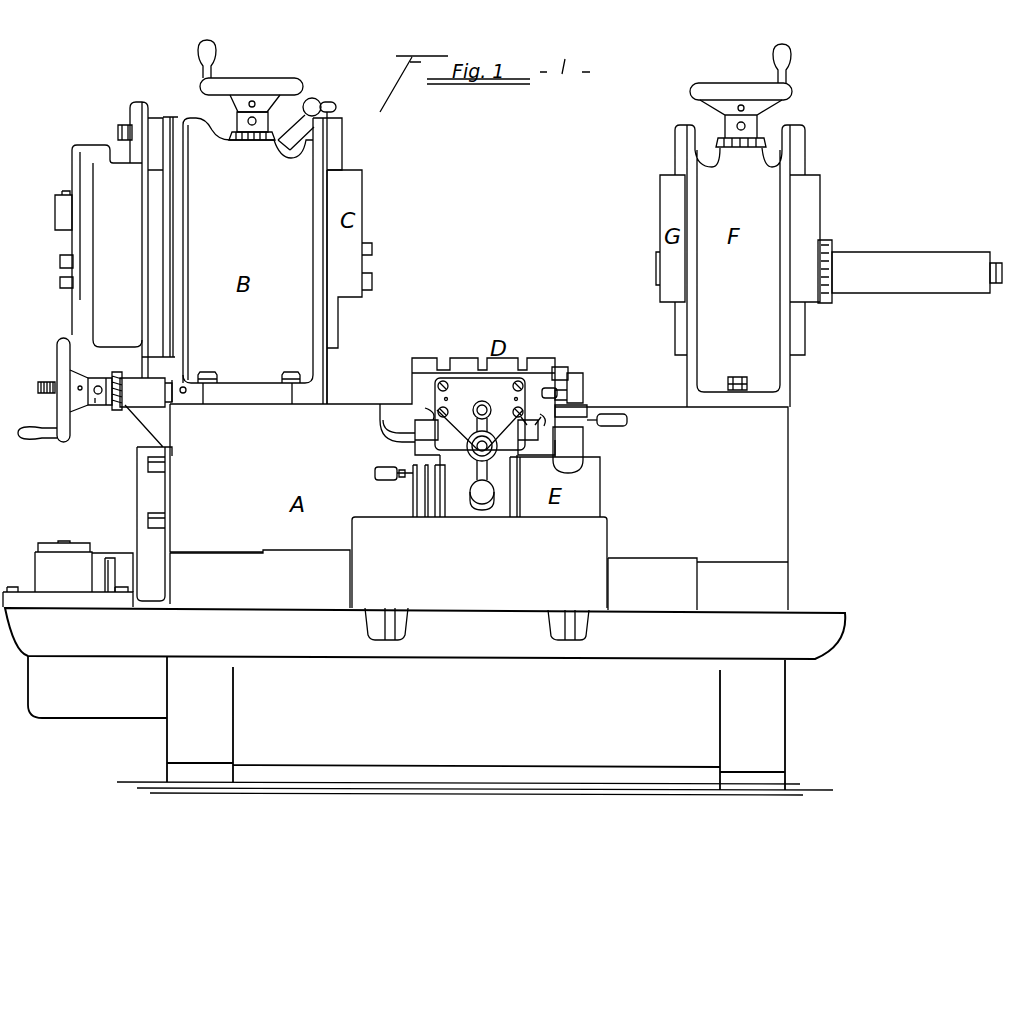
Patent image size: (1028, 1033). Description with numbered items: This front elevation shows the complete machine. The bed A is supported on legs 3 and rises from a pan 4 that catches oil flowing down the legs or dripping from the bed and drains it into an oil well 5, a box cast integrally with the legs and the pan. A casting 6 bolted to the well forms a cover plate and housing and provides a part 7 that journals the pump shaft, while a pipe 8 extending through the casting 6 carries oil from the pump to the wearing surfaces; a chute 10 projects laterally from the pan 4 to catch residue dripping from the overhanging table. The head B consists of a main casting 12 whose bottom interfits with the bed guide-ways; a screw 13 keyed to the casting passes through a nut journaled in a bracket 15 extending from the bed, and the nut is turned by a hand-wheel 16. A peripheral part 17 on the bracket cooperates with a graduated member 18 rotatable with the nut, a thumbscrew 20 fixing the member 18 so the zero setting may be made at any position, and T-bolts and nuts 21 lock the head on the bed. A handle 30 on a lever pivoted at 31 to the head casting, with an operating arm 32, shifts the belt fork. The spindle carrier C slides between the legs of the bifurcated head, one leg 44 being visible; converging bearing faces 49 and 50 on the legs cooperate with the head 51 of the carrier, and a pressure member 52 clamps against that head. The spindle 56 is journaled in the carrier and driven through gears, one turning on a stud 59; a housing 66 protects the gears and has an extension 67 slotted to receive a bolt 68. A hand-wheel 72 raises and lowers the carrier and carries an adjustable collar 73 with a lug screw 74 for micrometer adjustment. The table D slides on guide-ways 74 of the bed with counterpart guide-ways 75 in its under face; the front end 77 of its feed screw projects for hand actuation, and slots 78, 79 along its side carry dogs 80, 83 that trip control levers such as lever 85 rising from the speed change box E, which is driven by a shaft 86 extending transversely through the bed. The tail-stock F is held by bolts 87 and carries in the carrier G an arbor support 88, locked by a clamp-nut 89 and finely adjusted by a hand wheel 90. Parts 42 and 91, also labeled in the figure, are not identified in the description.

The legs 3 is at (479, 580).
The pan 4 is at (833, 627).
The oil well 5 is at (374, 719).
The casting 6 is at (20, 597).
The part 7 is at (88, 558).
The pipe 8 is at (110, 566).
The chute 10 is at (479, 578).
The main casting 12 is at (225, 391).
The screw 13 is at (42, 400).
The bracket 15 is at (145, 379).
The hand-wheel 16 is at (38, 387).
The peripheral part 17 is at (119, 373).
The member 18 is at (97, 378).
The thumbscrew 20 is at (95, 403).
The T-bolts and nuts 21 is at (283, 375).
The handle 30 is at (312, 98).
The pivot 31 is at (326, 104).
The operating arm 32 is at (296, 122).
The bracket 42 is at (140, 503).
The leg 44 is at (186, 150).
The bearing faces 49 is at (345, 150).
The bearing faces 50 is at (167, 312).
The head 51 is at (358, 199).
The pressure member 52 is at (160, 235).
The spindle 56 is at (372, 247).
The stud 59 is at (55, 222).
The housing 66 is at (72, 171).
The extension 67 is at (138, 104).
The bolt 68 is at (121, 126).
The hand-wheel 72 is at (275, 79).
The adjustable collar 73 is at (242, 127).
The lug screw 74 is at (243, 118).
The counterpart guide-ways 75 is at (485, 437).
The front end of feed screw 77 is at (481, 449).
The slot 78 is at (540, 386).
The slot 79 is at (556, 368).
The dog 80 is at (576, 392).
The dog 83 is at (563, 434).
The control lever 85 is at (627, 420).
The shaft 86 is at (483, 503).
The bolts 87 is at (741, 378).
The arbor support 88 is at (861, 258).
The clamp-nut 89 is at (828, 250).
The hand wheel 90 is at (737, 90).
The nut 91 is at (998, 270).